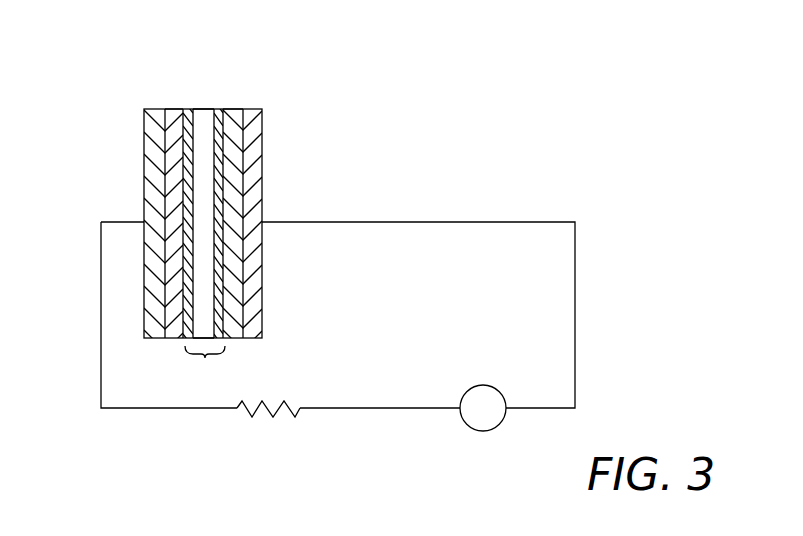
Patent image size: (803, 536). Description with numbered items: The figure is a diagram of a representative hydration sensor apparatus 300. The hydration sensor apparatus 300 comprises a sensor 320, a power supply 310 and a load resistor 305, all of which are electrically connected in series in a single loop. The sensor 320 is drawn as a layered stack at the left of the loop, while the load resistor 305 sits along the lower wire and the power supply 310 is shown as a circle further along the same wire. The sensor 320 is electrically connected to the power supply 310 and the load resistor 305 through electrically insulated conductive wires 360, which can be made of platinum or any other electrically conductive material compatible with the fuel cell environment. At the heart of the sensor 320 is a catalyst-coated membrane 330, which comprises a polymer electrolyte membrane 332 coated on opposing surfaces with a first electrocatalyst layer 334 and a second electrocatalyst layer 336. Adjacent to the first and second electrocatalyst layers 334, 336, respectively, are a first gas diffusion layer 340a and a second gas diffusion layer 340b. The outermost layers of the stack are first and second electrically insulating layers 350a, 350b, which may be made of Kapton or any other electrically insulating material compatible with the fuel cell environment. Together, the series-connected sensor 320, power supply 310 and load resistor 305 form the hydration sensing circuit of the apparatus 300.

The hydration sensor apparatus 300 is at (527, 126).
The load resistor 305 is at (271, 424).
The power supply 310 is at (467, 436).
The sensor 320 is at (249, 38).
The catalyst-coated membrane 330 is at (205, 367).
The polymer electrolyte membrane 332 is at (205, 108).
The first electrocatalyst layer 334 is at (189, 108).
The second electrocatalyst layer 336 is at (218, 108).
The first gas diffusion layer 340a is at (176, 108).
The second gas diffusion layer 340b is at (233, 108).
The first electrically insulating layer 350a is at (144, 162).
The second electrically insulating layer 350b is at (262, 170).
The electrically insulated conductive wires 360 is at (576, 310).